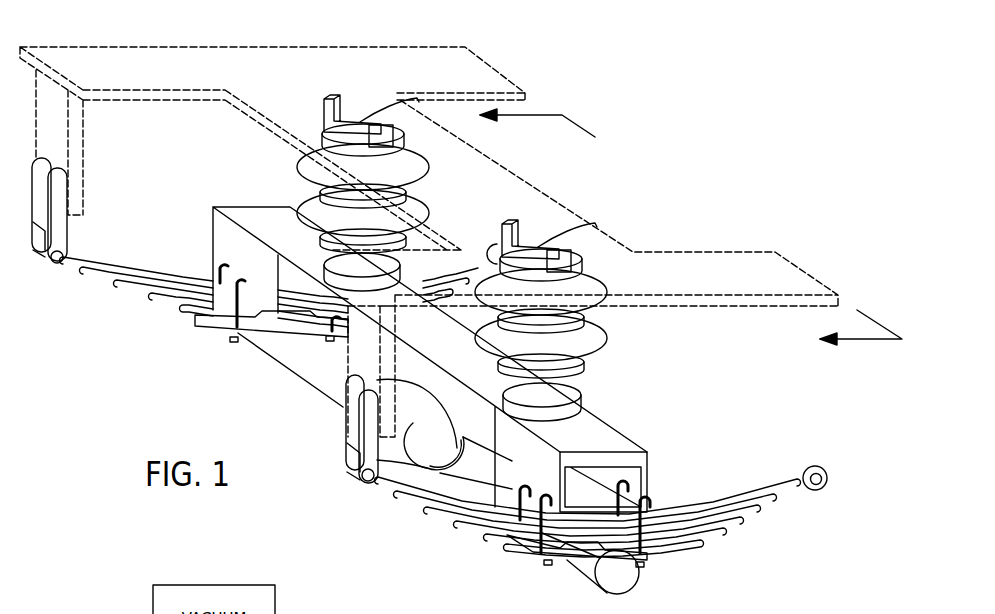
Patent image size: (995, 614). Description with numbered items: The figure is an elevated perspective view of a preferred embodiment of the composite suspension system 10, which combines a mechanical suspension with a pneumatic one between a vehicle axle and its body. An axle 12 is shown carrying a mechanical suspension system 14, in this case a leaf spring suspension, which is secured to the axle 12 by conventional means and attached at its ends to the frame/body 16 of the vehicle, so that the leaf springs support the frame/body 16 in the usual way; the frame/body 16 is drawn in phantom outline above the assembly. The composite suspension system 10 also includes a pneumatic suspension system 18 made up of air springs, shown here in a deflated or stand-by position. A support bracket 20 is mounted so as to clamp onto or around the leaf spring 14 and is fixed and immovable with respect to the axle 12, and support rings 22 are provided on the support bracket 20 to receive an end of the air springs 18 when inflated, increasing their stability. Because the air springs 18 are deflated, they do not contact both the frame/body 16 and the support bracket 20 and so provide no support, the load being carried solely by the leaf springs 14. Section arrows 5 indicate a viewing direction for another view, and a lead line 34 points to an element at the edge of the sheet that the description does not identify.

The section view direction arrows 5 is at (691, 227).
The composite suspension system 10 is at (123, 407).
The axle 12 is at (290, 372).
The mechanical suspension system 14 is at (95, 282).
The frame/body 16 is at (203, 47).
The pneumatic suspension system 18 is at (295, 165).
The support bracket 20 is at (637, 441).
The support rings 22 is at (327, 257).
The vacuum line 34 is at (708, 613).